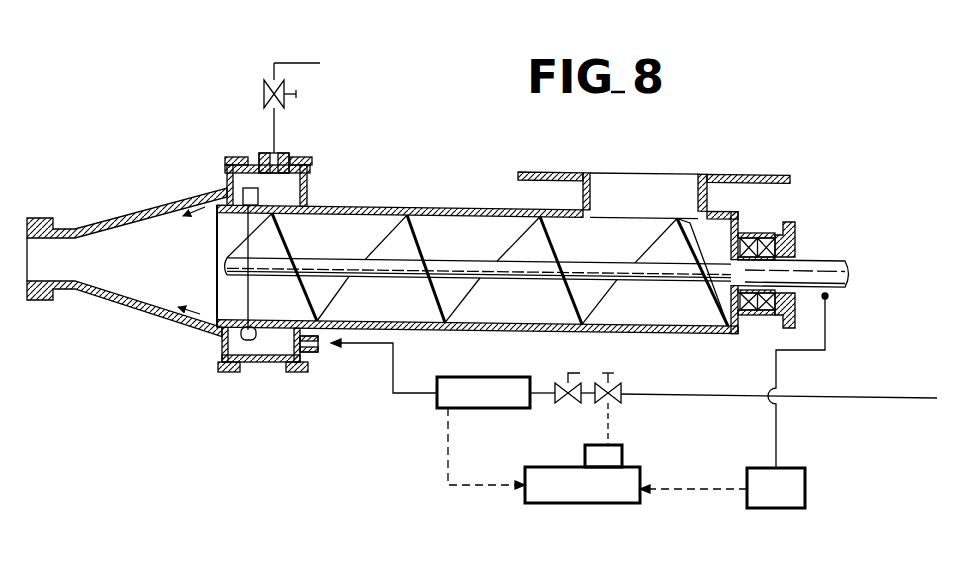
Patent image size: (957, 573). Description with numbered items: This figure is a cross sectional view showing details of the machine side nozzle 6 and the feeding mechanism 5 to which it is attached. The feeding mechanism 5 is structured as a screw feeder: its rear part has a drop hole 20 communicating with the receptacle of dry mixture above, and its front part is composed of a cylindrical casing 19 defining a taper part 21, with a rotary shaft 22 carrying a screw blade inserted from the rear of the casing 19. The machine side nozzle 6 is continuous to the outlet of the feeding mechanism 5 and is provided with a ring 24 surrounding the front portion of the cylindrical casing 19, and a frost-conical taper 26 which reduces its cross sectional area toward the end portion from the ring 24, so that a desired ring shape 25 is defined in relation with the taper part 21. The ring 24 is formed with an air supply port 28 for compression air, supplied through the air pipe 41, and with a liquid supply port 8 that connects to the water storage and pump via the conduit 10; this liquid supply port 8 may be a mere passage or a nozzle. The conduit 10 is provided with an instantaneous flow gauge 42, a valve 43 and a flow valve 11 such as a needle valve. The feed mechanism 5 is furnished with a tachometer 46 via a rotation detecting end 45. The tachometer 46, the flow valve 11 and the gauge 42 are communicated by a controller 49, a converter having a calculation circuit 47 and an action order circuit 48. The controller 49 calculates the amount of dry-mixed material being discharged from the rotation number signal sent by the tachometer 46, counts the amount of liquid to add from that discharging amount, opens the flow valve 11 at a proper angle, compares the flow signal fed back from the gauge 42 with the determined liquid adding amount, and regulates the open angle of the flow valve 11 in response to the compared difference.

The feeding mechanism 5 is at (404, 206).
The machine side nozzle 6 is at (184, 198).
The liquid supply port 8 is at (313, 352).
The conduit 10 is at (720, 399).
The flow valve 11 is at (609, 380).
The cylindrical casing 19 is at (678, 334).
The drop hole 20 is at (653, 188).
The taper part 21 is at (222, 340).
The rotary shaft 22 is at (465, 262).
The ring 24 is at (266, 363).
The ring shape 25 is at (217, 190).
The frost-conical taper 26 is at (153, 315).
The air supply port 28 is at (276, 151).
The air pipe 41 is at (297, 60).
The instantaneous flow gauge 42 is at (505, 387).
The valve 43 is at (565, 404).
The rotation detecting end 45 is at (828, 299).
The tachometer 46 is at (800, 480).
The calculation circuit 47 is at (612, 492).
The action order circuit 48 is at (618, 458).
The controller 49 is at (533, 505).